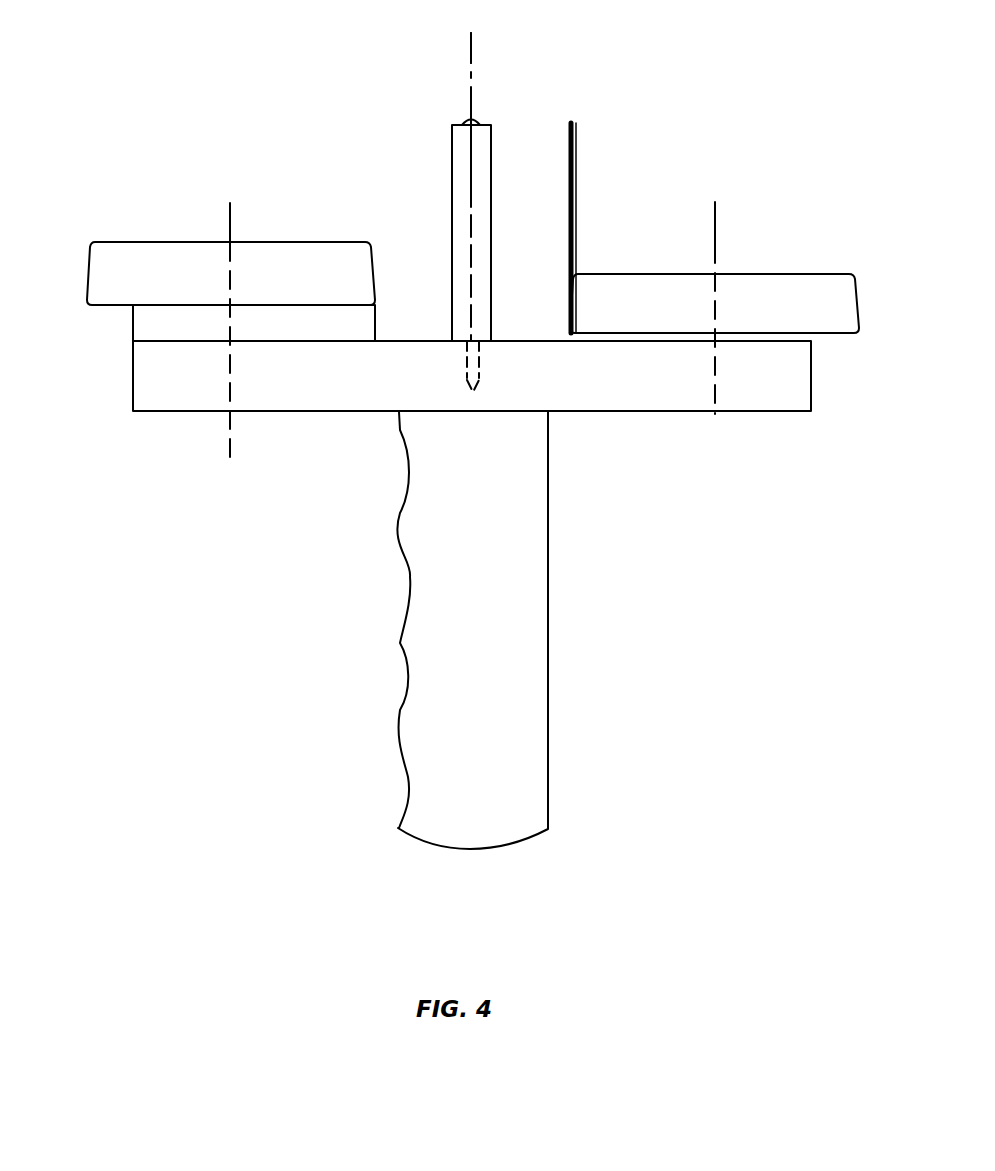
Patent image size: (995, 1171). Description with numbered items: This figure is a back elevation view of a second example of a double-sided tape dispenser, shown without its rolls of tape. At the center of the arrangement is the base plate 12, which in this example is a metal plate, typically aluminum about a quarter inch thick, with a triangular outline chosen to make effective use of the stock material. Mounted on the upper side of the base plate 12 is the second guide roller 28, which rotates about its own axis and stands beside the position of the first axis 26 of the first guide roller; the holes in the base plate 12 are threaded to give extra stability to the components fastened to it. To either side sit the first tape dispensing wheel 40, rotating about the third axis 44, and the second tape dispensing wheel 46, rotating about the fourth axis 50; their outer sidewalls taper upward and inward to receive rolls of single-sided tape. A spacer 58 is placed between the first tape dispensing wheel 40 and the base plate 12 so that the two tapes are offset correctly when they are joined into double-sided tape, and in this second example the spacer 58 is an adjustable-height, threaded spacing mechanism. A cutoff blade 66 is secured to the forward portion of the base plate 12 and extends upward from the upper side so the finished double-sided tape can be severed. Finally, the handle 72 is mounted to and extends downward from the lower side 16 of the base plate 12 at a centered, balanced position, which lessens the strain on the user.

The base plate 12 is at (120, 387).
The lower side 16 is at (265, 412).
The first axis 26 is at (473, 41).
The second guide roller 28 is at (452, 224).
The first tape dispensing wheel 40 is at (118, 228).
The third axis 44 is at (230, 218).
The second tape dispensing wheel 46 is at (815, 258).
The fourth axis 50 is at (715, 203).
The spacer 58 is at (148, 322).
The cutoff blade 66 is at (577, 153).
The handle 72 is at (545, 633).